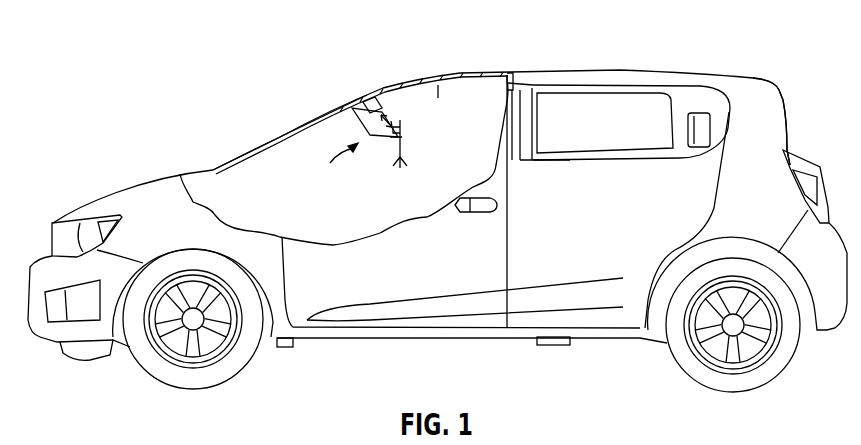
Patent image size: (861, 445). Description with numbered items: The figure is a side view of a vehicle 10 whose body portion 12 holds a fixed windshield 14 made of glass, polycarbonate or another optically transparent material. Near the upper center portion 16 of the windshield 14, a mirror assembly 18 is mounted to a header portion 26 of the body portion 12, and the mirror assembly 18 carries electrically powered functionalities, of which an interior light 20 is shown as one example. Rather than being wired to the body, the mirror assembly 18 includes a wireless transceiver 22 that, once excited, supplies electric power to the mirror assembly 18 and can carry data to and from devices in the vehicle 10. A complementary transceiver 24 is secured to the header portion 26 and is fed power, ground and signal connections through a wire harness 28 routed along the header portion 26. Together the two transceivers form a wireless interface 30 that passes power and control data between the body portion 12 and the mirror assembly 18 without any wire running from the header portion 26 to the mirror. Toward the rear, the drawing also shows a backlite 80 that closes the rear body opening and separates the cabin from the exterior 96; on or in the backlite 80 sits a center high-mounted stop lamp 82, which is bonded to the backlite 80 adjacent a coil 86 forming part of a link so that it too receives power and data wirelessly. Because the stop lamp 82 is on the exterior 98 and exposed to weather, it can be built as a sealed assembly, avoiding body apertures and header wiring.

The vehicle 10 is at (636, 52).
The body portion 12 is at (460, 72).
The windshield 14 is at (200, 170).
The upper center portion 16 is at (343, 110).
The mirror assembly 18 is at (327, 162).
The interior light 20 is at (408, 158).
The wireless transceiver 22 is at (374, 135).
The transceiver 24 is at (362, 130).
The header portion 26 is at (372, 105).
The wire harness 28 is at (392, 100).
The wireless interface 30 is at (402, 132).
The backlite 80 is at (793, 147).
The center high-mounted stop lamp 82 is at (793, 108).
The coil 86 is at (768, 90).
The exterior 96 is at (612, 236).
The exterior 98 is at (832, 40).